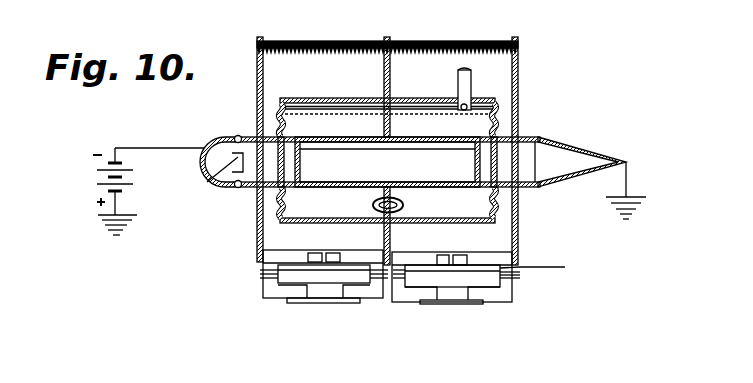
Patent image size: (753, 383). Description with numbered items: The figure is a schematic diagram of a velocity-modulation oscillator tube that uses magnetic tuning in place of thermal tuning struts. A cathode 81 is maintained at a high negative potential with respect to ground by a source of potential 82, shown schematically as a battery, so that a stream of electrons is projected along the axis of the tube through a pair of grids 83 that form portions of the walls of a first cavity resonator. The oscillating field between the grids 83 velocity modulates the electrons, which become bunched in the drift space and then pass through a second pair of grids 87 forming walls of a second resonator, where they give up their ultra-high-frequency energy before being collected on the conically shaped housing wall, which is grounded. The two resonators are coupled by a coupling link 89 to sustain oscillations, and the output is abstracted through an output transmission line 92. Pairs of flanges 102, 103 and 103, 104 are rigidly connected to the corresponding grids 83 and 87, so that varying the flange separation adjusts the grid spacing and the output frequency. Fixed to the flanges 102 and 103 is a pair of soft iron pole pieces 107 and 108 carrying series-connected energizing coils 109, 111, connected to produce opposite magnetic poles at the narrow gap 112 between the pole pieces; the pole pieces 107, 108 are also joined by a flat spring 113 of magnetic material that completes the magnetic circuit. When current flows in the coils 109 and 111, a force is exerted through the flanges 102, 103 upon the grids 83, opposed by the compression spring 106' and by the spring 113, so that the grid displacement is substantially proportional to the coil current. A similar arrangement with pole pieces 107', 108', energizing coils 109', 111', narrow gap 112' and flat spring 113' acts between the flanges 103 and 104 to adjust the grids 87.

The cathode 81 is at (213, 185).
The source of potential 82 is at (92, 181).
The pair of grids 83 is at (308, 142).
The second pair of grids 87 is at (482, 150).
The coupling link 89 is at (373, 205).
The output transmission line 92 is at (457, 84).
The flange 102 is at (257, 228).
The flange 103 is at (384, 236).
The flange 104 is at (519, 216).
The compression spring 106' is at (387, 34).
The pole piece 107 is at (319, 298).
The pole piece 108 is at (334, 324).
The energizing coil 109 is at (298, 293).
The energizing coil 111 is at (327, 303).
The narrow gap 112 is at (317, 293).
The flat spring 113 is at (323, 330).
The pole piece 107' is at (450, 292).
The pole piece 108' is at (472, 313).
The energizing coil 109' is at (479, 254).
The energizing coil 111' is at (495, 279).
The narrow gap 112' is at (470, 248).
The flat spring 113' is at (451, 328).